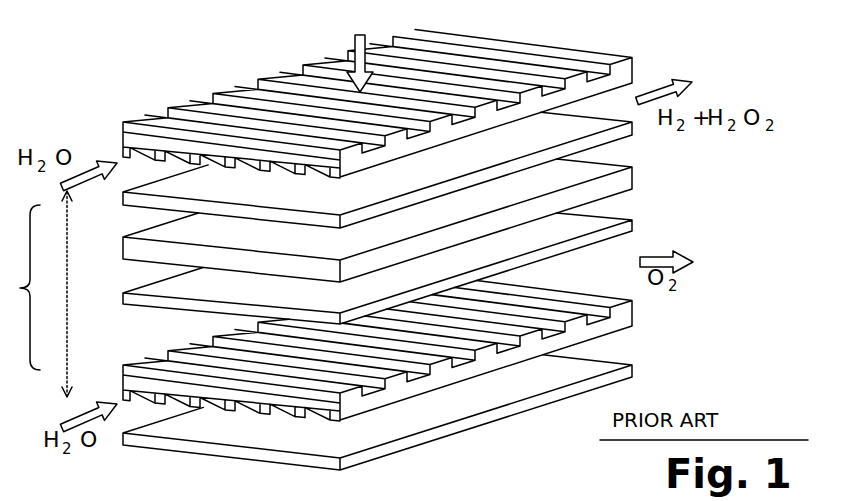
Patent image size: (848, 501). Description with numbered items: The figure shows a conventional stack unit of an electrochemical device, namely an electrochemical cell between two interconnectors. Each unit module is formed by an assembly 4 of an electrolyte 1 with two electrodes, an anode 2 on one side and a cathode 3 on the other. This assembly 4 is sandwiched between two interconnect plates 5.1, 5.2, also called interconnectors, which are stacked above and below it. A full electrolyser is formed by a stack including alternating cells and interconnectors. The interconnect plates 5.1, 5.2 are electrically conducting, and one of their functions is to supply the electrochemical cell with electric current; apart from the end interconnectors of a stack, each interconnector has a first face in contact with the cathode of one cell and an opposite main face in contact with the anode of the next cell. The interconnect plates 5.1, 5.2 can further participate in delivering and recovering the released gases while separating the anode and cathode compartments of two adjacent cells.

The electrolyte 1 is at (123, 252).
The anode 2 is at (123, 194).
The cathode 3 is at (123, 302).
The assembly 4 is at (37, 294).
The interconnect plate 5.1 is at (613, 54).
The interconnect plate 5.2 is at (622, 320).